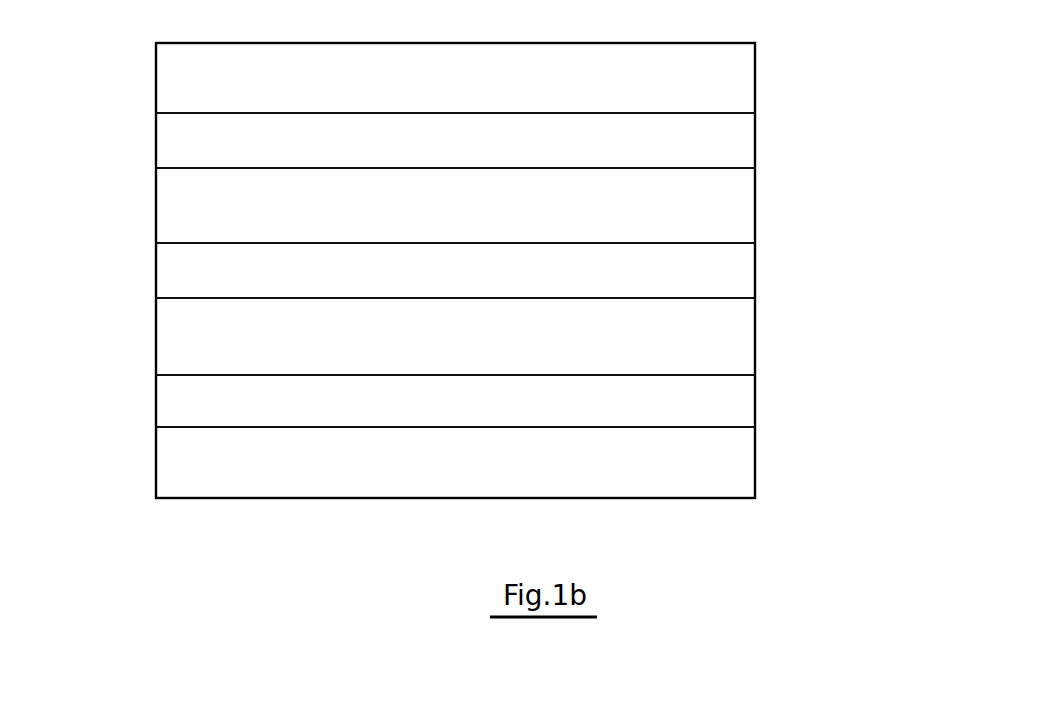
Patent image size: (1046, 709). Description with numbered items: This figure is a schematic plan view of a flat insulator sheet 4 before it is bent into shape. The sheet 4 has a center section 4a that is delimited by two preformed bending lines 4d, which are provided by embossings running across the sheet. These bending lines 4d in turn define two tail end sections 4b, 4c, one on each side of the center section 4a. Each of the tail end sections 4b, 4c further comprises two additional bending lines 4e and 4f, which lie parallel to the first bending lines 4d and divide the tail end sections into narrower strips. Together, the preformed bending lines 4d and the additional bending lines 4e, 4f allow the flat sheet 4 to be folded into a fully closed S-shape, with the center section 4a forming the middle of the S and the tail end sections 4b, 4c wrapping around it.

The flat sheet 4 is at (948, 85).
The center section 4a is at (455, 270).
The tail end section 4b is at (146, 43).
The tail end section 4c is at (147, 298).
The preformed bending line 4d is at (755, 243).
The additional bending line 4e is at (755, 168).
The additional bending line 4f is at (755, 113).